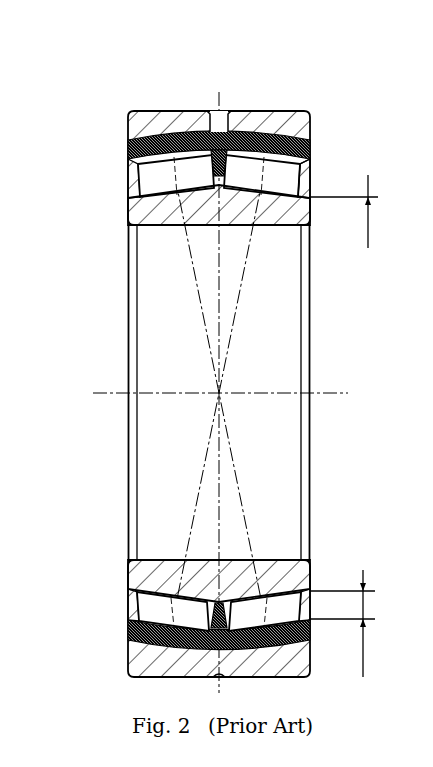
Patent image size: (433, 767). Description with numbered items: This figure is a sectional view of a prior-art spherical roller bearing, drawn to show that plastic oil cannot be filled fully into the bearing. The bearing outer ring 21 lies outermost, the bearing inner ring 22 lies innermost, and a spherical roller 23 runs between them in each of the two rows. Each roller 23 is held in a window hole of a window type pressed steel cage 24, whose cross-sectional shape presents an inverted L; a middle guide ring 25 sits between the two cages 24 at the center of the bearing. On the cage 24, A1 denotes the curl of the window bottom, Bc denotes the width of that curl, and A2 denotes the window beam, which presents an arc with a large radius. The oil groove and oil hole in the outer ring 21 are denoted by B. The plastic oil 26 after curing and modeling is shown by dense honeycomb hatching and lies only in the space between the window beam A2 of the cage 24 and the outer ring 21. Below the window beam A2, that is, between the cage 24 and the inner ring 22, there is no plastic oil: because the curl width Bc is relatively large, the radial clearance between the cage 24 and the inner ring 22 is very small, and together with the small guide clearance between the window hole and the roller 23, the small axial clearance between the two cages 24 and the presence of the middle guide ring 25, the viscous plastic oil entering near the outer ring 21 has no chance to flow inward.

The bearing outer ring 21 is at (148, 128).
The bearing inner ring 22 is at (148, 213).
The spherical roller 23 is at (143, 163).
The window type pressed steel cage 24 is at (130, 608).
The middle guide ring 25 is at (165, 589).
The plastic oil after curing and modeling 26 is at (128, 657).
The oil groove and oil hole B is at (220, 112).
The curl of window bottom of cage A1 is at (310, 180).
The window beam of cage A2 is at (310, 148).
The width of curl Bc is at (342, 623).